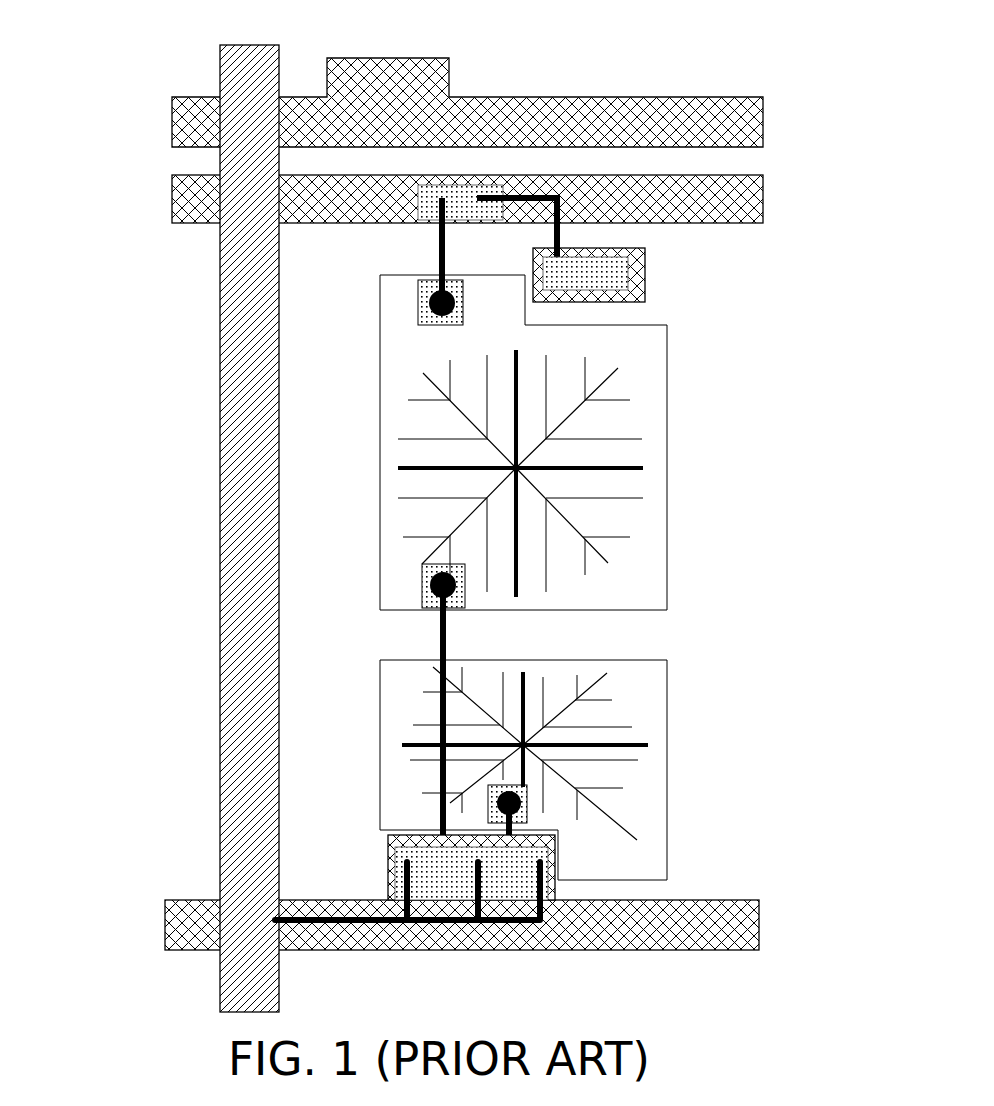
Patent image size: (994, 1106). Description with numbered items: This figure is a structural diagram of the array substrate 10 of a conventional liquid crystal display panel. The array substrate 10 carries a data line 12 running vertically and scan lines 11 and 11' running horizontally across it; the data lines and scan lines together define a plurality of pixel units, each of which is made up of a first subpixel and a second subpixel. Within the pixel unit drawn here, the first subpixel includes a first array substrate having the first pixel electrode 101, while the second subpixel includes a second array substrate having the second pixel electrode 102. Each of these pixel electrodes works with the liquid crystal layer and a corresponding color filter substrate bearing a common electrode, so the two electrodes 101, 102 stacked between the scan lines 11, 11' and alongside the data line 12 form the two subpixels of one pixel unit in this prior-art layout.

The array substrate 10 is at (126, 95).
The scan line 11 is at (494, 504).
The scan line 11' is at (502, 194).
The data line 12 is at (280, 50).
The first pixel electrode 101 is at (667, 475).
The second pixel electrode 102 is at (667, 707).